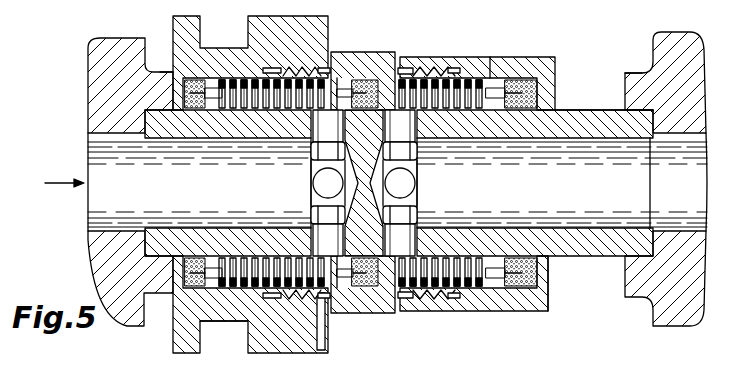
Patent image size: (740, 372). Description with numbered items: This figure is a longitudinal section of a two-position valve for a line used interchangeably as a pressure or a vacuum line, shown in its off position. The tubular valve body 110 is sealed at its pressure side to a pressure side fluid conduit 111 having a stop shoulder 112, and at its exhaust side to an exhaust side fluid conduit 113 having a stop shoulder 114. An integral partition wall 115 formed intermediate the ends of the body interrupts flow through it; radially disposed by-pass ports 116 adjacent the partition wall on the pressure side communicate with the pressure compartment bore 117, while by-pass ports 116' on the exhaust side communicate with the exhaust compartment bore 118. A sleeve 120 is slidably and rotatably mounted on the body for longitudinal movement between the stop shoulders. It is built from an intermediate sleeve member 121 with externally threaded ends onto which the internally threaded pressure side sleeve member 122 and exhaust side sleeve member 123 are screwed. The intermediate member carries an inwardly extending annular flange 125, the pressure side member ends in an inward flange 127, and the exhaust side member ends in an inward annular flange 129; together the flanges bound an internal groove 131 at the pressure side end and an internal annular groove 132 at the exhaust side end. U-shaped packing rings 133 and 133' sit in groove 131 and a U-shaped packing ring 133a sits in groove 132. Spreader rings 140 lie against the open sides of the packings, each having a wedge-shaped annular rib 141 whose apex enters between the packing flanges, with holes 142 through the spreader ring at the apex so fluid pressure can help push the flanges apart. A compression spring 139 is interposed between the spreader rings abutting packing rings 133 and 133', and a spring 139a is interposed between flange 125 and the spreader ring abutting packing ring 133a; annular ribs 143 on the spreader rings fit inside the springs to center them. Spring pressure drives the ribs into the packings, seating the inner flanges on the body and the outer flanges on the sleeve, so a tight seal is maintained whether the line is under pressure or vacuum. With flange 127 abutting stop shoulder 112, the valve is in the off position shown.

The valve body 110 is at (590, 110).
The pressure side fluid conduit 111 is at (140, 45).
The stop shoulder 112 is at (168, 72).
The exhaust side fluid conduit 113 is at (690, 42).
The stop shoulder 114 is at (627, 74).
The partition wall 115 is at (404, 186).
The by-pass ports 116 is at (350, 158).
The by-pass ports 116' is at (394, 227).
The pressure compartment bore 117 is at (199, 183).
The exhaust compartment bore 118 is at (562, 183).
The sleeve 120 is at (386, 58).
The intermediate sleeve member 121 is at (370, 56).
The pressure side sleeve member 122 is at (250, 44).
The exhaust side sleeve member 123 is at (519, 57).
The annular flange 125 is at (402, 64).
The flange 127 is at (172, 295).
The annular flange 129 is at (548, 283).
The internal groove 131 is at (224, 335).
The internal annular groove 132 is at (462, 288).
The U-shaped packing ring 133 is at (281, 183).
The U-shaped packing ring 133' is at (363, 304).
The U-shaped packing ring 133a is at (516, 286).
The compression spring 139 is at (318, 350).
The spring 139a is at (448, 75).
The spreader rings 140 is at (328, 72).
The annular rib 141 is at (494, 92).
The holes 142 is at (236, 100).
The annular ribs 143 is at (492, 80).